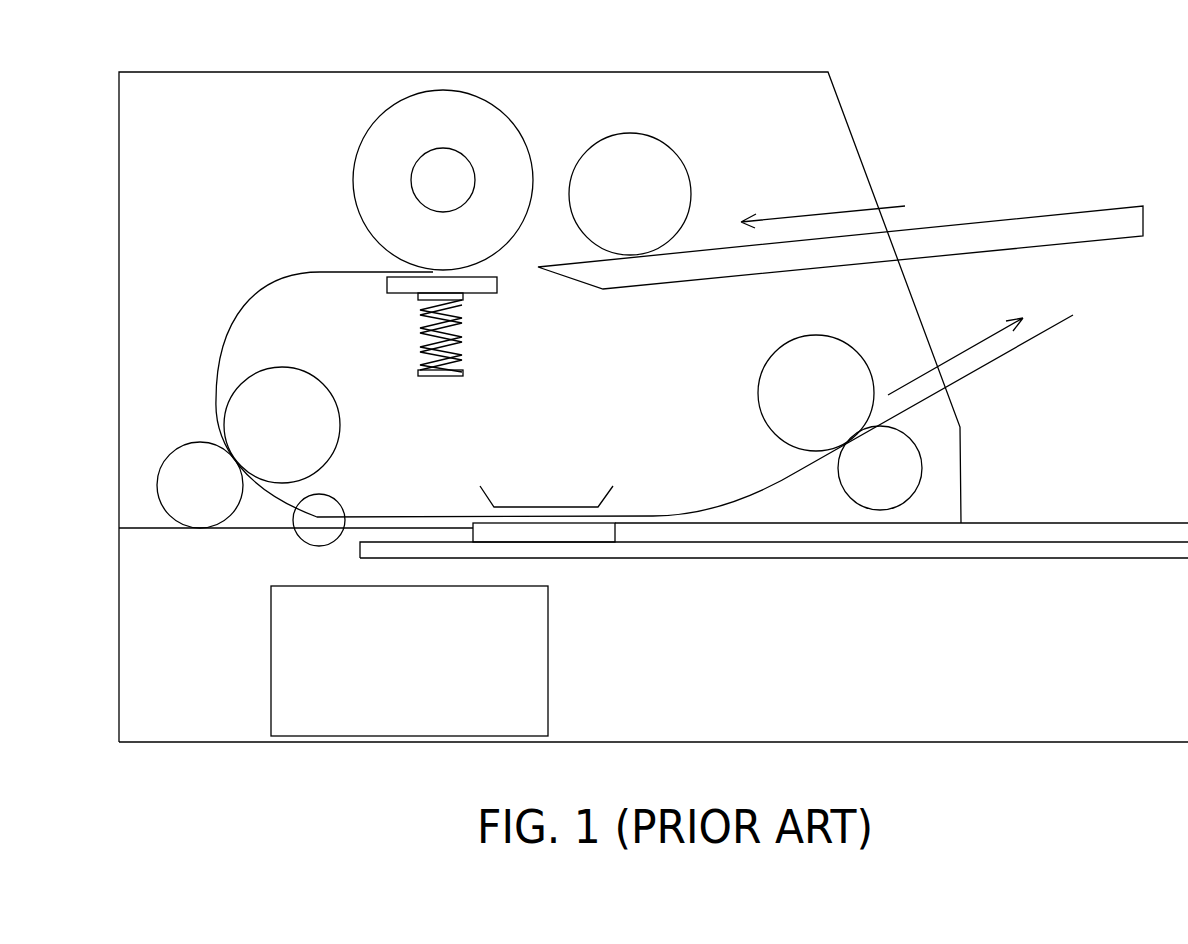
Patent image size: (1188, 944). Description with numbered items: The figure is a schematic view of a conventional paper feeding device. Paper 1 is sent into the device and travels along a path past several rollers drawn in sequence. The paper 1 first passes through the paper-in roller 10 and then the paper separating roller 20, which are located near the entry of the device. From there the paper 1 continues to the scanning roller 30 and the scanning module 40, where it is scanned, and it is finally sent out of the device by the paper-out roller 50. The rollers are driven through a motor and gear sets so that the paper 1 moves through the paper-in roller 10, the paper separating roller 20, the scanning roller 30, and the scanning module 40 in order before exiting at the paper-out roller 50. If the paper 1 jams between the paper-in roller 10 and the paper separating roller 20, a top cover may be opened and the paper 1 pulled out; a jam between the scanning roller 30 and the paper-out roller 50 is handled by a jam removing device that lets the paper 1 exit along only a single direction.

The paper 1 is at (977, 220).
The paper-in roller 10 is at (637, 157).
The paper separating roller 20 is at (445, 108).
The scanning roller 30 is at (247, 405).
The scanning module 40 is at (317, 686).
The paper-out roller 50 is at (843, 370).